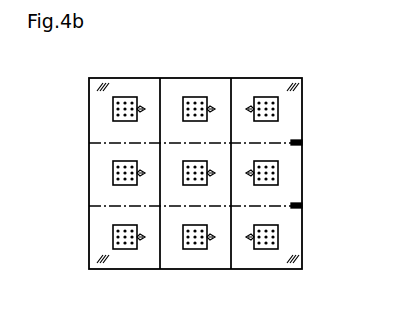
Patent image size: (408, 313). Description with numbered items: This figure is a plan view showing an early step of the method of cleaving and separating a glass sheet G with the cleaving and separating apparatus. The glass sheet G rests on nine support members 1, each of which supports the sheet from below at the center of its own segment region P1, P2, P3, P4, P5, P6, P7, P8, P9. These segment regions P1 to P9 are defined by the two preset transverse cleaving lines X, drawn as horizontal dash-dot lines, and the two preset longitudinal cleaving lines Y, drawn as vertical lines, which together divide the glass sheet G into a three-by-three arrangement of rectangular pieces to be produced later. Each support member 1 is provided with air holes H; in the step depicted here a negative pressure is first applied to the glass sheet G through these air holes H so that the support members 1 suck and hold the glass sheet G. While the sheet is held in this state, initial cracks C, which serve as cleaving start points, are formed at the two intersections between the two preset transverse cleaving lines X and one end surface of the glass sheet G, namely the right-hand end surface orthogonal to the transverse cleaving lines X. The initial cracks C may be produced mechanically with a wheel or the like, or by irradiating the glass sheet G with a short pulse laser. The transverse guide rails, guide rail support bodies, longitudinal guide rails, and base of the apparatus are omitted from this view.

The support member 1 is at (113, 107).
The segment region P1 is at (125, 85).
The segment region P2 is at (205, 85).
The segment region P3 is at (273, 85).
The segment region P4 is at (105, 196).
The segment region P5 is at (221, 198).
The segment region P6 is at (300, 157).
The segment region P7 is at (124, 262).
The segment region P8 is at (204, 260).
The segment region P9 is at (248, 261).
The preset transverse cleaving line X is at (111, 143).
The preset longitudinal cleaving line Y is at (160, 88).
The air hole H is at (195, 174).
The initial crack C is at (298, 140).
The glass sheet G is at (288, 242).